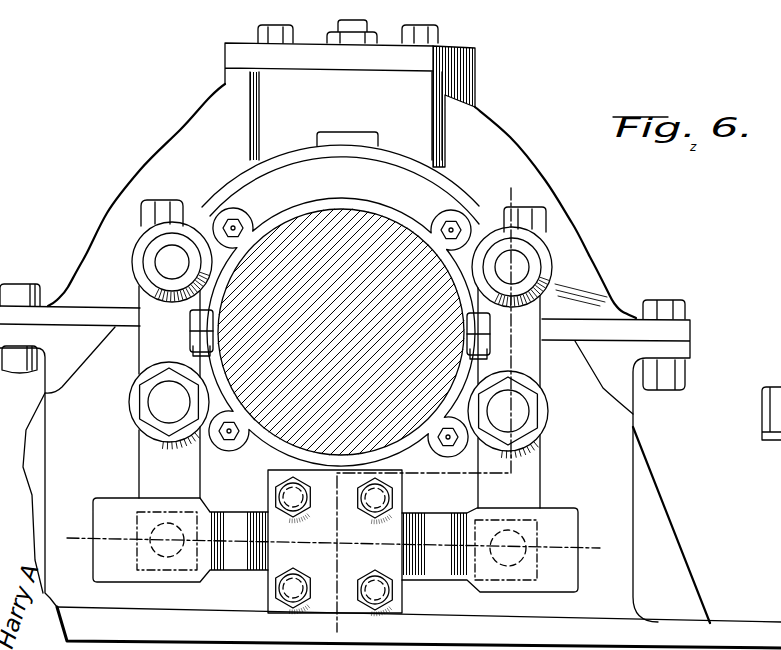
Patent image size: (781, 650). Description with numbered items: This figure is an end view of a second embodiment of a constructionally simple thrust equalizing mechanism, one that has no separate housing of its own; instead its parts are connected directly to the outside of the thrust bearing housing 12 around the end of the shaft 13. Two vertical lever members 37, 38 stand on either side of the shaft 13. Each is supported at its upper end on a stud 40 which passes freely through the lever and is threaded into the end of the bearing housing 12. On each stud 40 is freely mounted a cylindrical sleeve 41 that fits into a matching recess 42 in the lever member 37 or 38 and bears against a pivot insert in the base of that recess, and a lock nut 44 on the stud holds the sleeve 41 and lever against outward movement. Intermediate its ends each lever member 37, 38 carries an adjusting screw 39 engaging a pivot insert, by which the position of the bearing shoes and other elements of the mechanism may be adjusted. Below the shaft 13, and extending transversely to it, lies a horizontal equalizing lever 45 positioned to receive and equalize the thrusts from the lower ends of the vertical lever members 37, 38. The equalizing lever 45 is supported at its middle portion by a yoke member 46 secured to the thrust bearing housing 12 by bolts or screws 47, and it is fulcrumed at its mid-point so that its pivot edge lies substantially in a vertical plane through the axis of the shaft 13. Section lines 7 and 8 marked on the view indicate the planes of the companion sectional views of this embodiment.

The thrust bearing housing 12 is at (500, 137).
The shaft 13 is at (381, 223).
The vertical lever member 37 is at (536, 487).
The vertical lever member 38 is at (147, 468).
The adjusting screw 39 is at (157, 403).
The stud 40 is at (167, 262).
The cylindrical sleeve 41 is at (148, 253).
The recess 42 is at (150, 243).
The lock nut 44 is at (153, 275).
The horizontal equalizing lever 45 is at (410, 568).
The yoke member 46 is at (275, 568).
The bolt or screw 47 is at (387, 502).
The section line 7 is at (77, 536).
The section line 8 is at (516, 193).